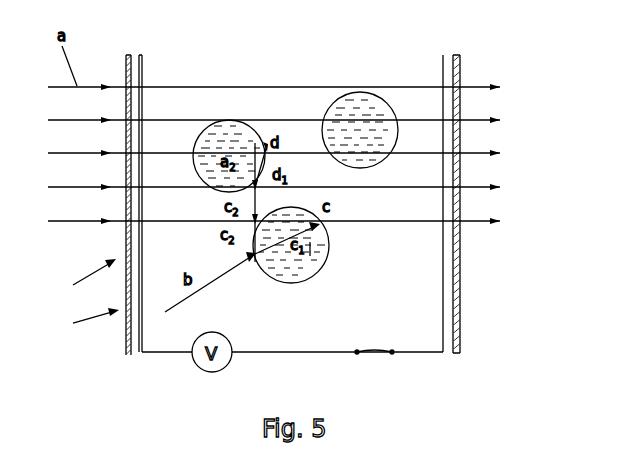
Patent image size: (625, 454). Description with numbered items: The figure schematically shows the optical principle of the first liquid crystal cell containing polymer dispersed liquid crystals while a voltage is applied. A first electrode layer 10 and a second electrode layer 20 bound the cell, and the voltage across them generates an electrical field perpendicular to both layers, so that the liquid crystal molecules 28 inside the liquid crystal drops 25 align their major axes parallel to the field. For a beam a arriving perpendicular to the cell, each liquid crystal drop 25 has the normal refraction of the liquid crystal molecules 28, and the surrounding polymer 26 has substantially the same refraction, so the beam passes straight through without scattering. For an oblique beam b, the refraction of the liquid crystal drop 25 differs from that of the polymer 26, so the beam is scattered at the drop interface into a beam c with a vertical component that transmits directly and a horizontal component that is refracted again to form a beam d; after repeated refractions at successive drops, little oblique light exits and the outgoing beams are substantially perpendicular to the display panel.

The first electrode layer 10 is at (125, 339).
The second electrode layer 20 is at (456, 326).
The liquid crystal drop 25 is at (207, 120).
The polymer 26 is at (431, 90).
The liquid crystal molecule 28 is at (378, 107).